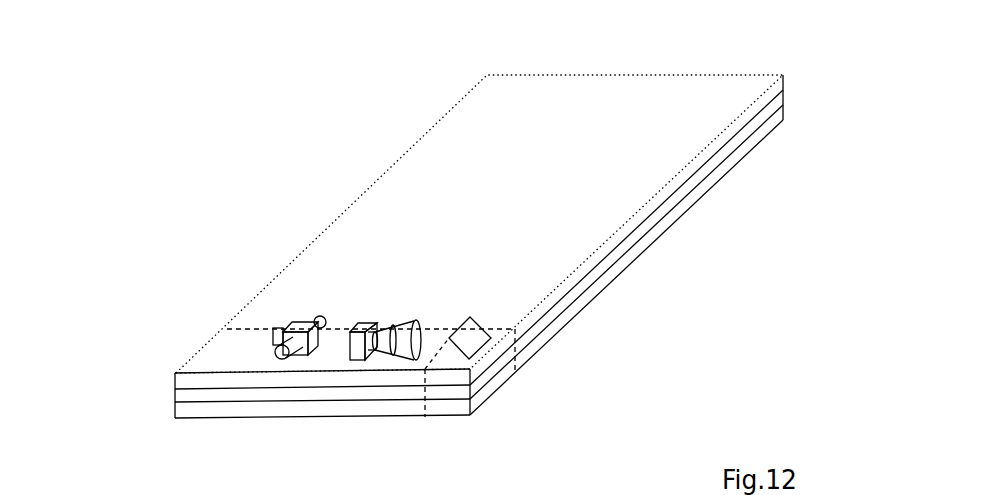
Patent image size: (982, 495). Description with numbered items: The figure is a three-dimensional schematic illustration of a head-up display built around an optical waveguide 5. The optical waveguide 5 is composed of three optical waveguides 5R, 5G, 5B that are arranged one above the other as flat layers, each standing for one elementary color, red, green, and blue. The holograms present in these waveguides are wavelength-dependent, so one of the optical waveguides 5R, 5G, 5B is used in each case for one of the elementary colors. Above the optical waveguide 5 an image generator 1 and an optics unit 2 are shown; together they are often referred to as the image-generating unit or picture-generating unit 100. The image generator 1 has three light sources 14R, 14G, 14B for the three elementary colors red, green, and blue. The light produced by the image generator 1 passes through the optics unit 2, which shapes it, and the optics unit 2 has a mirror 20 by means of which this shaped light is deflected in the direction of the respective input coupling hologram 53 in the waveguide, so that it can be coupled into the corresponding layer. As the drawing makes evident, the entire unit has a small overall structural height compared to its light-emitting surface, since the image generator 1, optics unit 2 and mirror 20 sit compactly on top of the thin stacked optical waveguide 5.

The picture-generating unit 100 is at (306, 281).
The image generator 1 is at (300, 320).
The optics unit 2 is at (380, 314).
The light source 14B is at (273, 327).
The light source 14G is at (282, 362).
The light source 14R is at (322, 328).
The optical waveguide 5 is at (433, 276).
The optical waveguide 5R is at (175, 378).
The optical waveguide 5G is at (177, 398).
The optical waveguide 5B is at (178, 417).
The mirror 20 is at (568, 354).
The input coupling hologram 53 is at (478, 360).